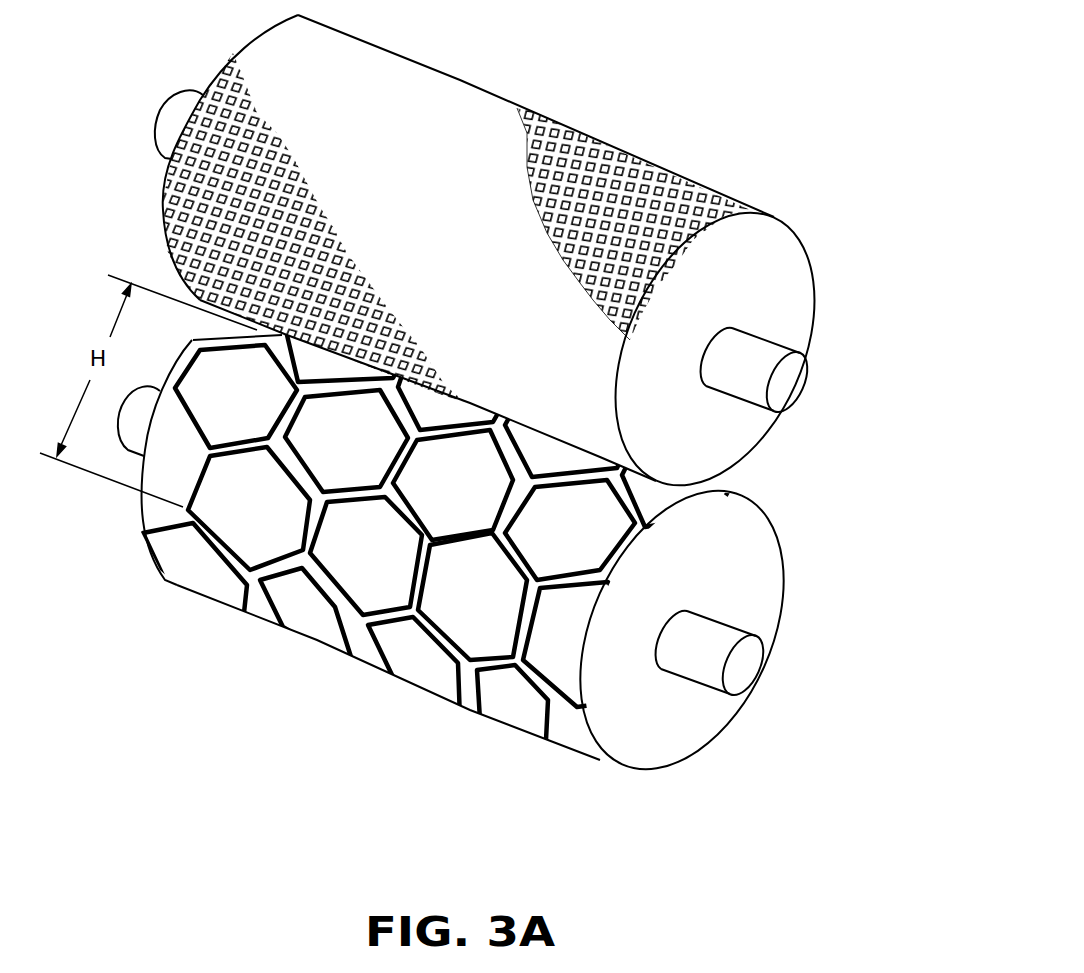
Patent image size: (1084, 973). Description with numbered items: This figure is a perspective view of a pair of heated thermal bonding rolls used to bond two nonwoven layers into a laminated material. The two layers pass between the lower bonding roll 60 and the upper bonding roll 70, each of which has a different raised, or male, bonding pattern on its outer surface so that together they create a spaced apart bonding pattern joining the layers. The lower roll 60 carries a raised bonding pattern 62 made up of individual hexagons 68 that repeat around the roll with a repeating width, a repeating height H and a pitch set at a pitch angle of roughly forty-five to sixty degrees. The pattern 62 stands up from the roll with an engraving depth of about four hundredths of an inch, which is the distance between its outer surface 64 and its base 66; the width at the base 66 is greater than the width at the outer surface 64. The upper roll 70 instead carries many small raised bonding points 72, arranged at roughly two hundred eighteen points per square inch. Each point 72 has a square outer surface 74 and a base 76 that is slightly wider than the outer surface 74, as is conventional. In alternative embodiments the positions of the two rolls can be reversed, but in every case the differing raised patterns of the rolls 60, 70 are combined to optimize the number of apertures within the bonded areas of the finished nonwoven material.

The lower bonding roll 60 is at (658, 768).
The raised bonding pattern 62 is at (441, 524).
The outer surface 64 is at (627, 548).
The base 66 is at (574, 587).
The hexagon 68 is at (239, 512).
The upper bonding roll 70 is at (810, 288).
The raised bonding points 72 is at (596, 168).
The outer surface 74 is at (292, 166).
The base 76 is at (672, 268).